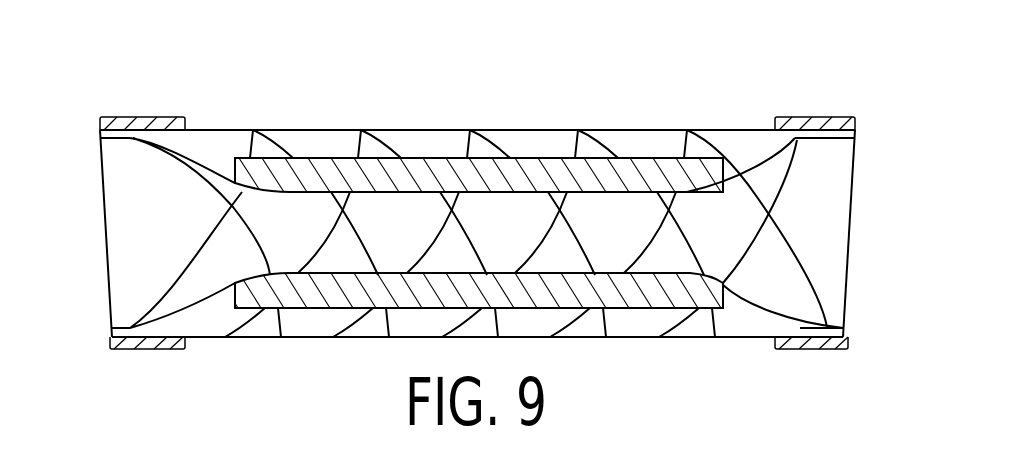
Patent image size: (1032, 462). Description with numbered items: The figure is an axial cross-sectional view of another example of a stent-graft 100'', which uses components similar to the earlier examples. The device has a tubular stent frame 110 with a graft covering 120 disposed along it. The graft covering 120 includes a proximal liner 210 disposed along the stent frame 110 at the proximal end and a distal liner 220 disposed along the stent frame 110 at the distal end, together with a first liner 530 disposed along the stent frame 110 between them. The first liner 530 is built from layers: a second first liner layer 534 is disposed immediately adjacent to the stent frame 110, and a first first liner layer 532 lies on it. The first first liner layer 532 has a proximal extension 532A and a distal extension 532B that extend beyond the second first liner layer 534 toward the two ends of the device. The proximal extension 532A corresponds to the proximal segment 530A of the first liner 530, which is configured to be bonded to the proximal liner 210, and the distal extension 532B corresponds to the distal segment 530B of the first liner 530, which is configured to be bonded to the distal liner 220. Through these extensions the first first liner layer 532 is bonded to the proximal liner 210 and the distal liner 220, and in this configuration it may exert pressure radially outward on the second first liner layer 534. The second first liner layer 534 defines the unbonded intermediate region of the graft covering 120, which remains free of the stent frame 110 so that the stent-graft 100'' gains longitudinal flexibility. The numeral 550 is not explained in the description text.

The stent-graft 100'' is at (475, 228).
The stent frame 110 is at (600, 130).
The graft covering 120 is at (885, 189).
The proximal liner 210 is at (117, 120).
The distal liner 220 is at (805, 118).
The first liner 530 is at (93, 136).
The proximal segment of the first liner 530A is at (134, 93).
The distal segment of the first liner 530B is at (821, 93).
The first first liner layer 532 is at (268, 160).
The proximal extension of the first first liner layer 532A is at (132, 155).
The distal extension of the first first liner layer 532B is at (812, 148).
The second first liner layer 534 is at (438, 158).
The upper core layer 550 is at (343, 167).